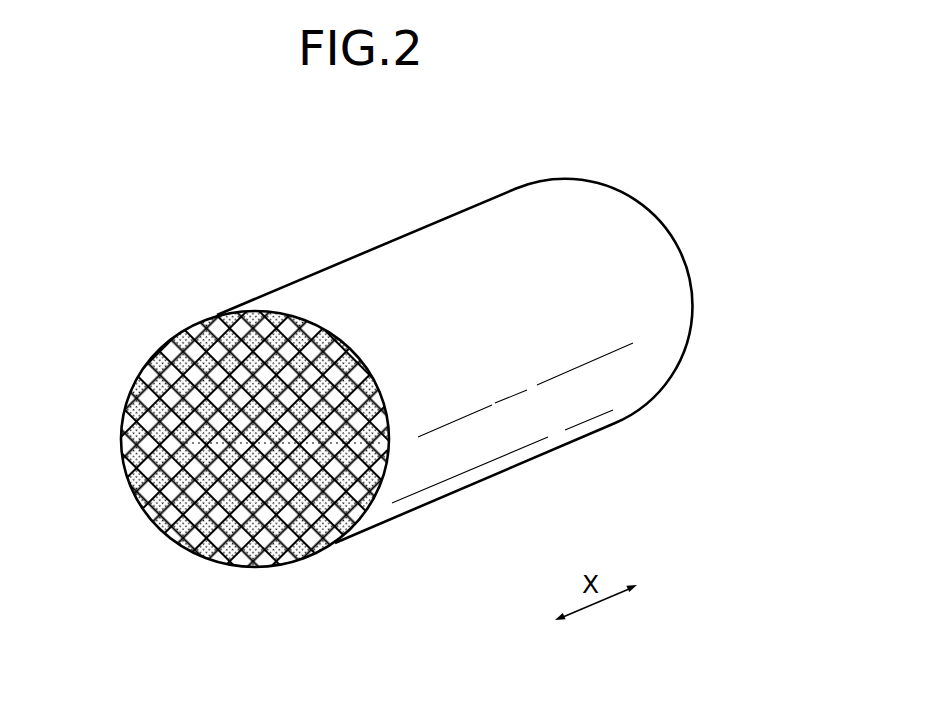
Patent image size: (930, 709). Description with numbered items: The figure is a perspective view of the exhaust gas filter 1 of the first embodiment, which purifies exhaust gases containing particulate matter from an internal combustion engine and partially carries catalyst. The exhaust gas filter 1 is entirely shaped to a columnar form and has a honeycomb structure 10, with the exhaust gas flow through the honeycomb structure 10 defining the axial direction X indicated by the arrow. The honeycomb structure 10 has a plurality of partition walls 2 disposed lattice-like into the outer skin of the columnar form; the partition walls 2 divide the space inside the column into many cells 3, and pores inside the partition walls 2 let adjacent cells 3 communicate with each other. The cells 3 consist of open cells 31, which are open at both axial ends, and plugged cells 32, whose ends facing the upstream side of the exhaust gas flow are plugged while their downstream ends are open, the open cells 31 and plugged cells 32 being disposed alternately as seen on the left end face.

The exhaust gas filter 1 is at (455, 308).
The honeycomb structure 10 is at (372, 277).
The partition walls 2 is at (210, 357).
The cells 3 is at (235, 454).
The open cells 31 is at (167, 403).
The plugged cells 32 is at (168, 348).